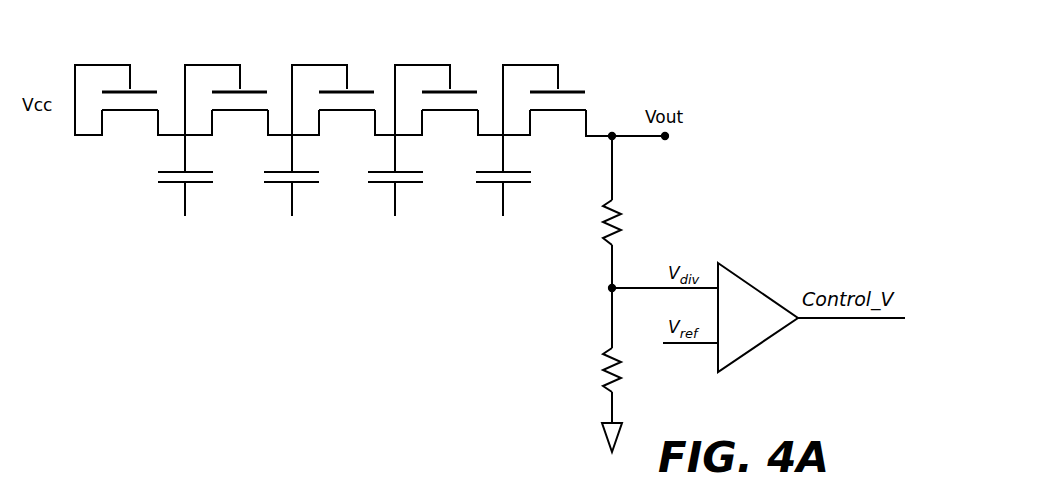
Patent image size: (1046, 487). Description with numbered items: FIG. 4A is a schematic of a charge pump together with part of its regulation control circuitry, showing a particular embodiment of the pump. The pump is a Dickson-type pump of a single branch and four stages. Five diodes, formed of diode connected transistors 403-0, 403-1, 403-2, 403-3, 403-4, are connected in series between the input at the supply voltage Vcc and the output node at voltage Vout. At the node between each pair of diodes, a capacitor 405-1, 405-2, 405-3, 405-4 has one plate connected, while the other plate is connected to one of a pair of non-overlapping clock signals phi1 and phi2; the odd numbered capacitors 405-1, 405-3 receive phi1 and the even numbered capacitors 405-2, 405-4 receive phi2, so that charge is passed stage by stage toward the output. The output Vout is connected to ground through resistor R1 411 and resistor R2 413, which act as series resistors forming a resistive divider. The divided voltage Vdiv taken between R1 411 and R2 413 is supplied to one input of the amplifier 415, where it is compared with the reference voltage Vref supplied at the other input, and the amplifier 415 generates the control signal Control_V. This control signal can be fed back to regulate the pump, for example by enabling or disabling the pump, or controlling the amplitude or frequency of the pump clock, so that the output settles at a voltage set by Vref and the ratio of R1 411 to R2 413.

The diode connected transistor 403-0 is at (147, 86).
The diode connected transistor 403-1 is at (257, 86).
The diode connected transistor 403-2 is at (364, 86).
The diode connected transistor 403-3 is at (467, 86).
The diode connected transistor 403-4 is at (575, 86).
The capacitor 405-1 is at (165, 186).
The capacitor 405-2 is at (272, 186).
The capacitor 405-3 is at (375, 186).
The capacitor 405-4 is at (483, 186).
The resistor R1 411 is at (621, 216).
The resistor R2 413 is at (622, 367).
The amplifier 415 is at (739, 266).